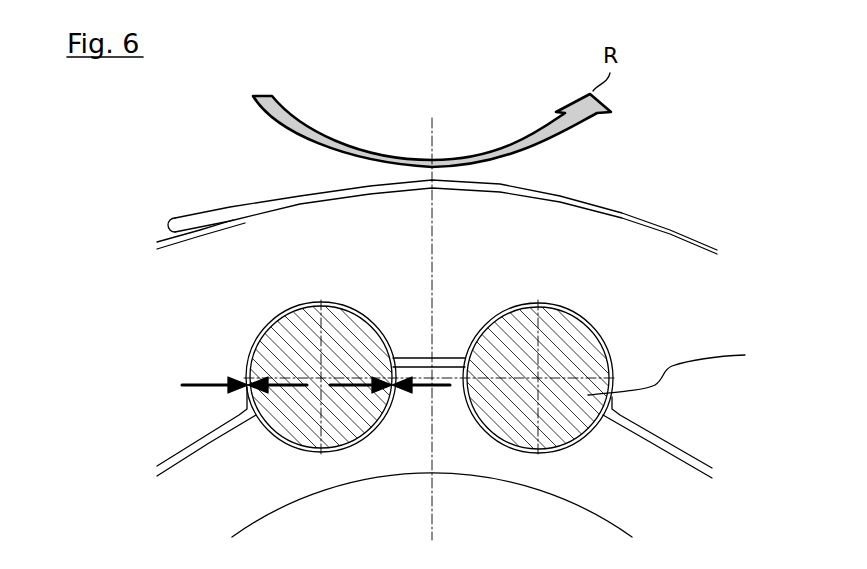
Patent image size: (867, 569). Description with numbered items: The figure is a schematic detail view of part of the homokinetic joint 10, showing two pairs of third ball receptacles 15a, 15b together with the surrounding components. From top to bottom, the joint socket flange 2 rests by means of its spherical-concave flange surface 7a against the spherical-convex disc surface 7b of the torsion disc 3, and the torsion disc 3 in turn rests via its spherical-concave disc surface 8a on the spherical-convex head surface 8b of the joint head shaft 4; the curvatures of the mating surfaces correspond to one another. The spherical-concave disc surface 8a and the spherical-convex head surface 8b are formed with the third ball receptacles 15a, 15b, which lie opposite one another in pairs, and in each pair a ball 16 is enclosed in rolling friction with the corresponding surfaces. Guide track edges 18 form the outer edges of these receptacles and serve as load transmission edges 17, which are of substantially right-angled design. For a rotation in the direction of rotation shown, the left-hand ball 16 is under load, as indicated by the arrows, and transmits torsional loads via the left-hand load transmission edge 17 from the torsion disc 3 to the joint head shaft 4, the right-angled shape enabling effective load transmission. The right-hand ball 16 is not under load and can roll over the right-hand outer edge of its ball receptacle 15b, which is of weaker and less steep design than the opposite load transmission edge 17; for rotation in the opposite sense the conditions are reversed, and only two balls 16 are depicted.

The homokinetic joint 10 is at (102, 150).
The joint socket flange 2 is at (668, 187).
The torsion disc 3 is at (690, 313).
The joint head shaft 4 is at (692, 503).
The spherical-concave flange surface 7a is at (622, 213).
The spherical-convex disc surface 7b is at (480, 190).
The spherical-concave disc surface 8a is at (562, 301).
The spherical-convex head surface 8b is at (657, 441).
The third ball receptacle 15a is at (250, 330).
The third ball receptacle 15b is at (270, 451).
The ball 16 is at (681, 370).
The load transmission edge 17 is at (395, 405).
The guide track edge 18 is at (459, 405).